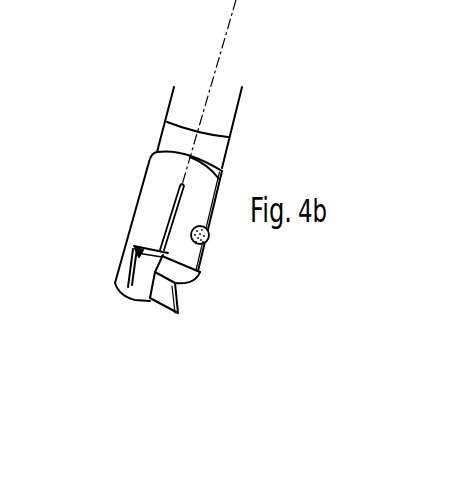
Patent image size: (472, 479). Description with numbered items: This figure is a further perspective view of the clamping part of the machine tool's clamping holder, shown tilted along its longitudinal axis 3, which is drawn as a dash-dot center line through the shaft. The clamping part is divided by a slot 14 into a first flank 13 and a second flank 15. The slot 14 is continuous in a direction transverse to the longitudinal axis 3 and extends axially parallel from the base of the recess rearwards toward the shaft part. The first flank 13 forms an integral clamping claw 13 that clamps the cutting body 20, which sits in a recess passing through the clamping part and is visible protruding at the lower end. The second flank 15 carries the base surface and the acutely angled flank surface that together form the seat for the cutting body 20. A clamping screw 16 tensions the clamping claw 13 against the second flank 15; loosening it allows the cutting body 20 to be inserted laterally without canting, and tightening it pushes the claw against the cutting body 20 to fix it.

The longitudinal axis 3 is at (215, 62).
The first flank 13 is at (195, 209).
The slot 14 is at (172, 213).
The second flank 15 is at (148, 220).
The clamping screw 16 is at (210, 240).
The cutting body 20 is at (163, 290).